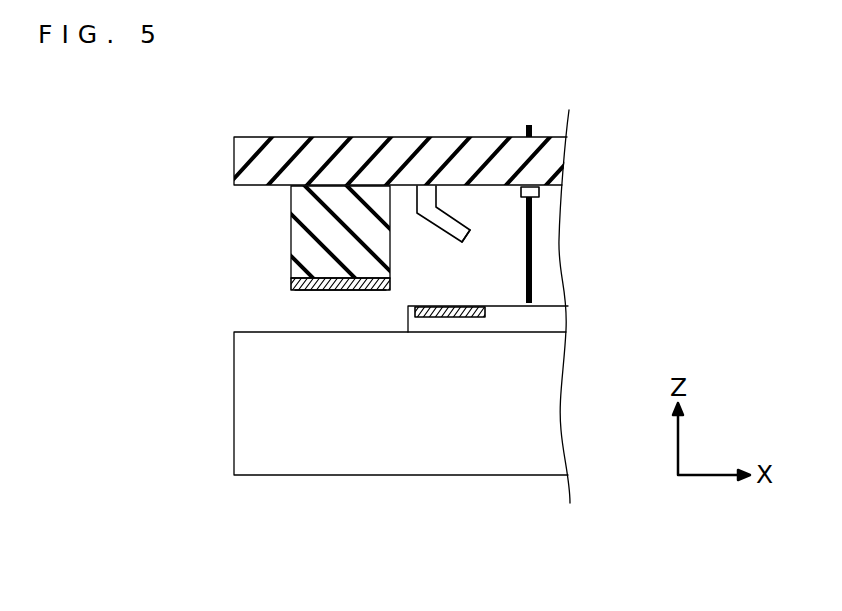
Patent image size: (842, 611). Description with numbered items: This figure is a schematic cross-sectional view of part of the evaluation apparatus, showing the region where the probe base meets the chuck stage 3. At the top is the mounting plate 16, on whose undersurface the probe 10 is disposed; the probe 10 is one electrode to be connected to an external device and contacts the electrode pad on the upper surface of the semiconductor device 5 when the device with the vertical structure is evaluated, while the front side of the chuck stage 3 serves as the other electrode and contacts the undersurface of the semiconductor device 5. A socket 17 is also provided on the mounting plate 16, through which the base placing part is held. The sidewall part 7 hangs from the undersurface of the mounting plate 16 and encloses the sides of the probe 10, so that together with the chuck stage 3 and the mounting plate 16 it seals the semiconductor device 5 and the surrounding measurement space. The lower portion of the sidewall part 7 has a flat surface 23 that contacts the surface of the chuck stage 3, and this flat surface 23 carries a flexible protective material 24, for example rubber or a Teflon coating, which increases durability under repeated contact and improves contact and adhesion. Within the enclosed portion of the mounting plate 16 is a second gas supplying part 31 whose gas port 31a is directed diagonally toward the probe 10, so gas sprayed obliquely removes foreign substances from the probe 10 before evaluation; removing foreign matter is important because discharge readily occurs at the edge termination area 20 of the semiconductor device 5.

The chuck stage 3 is at (250, 415).
The semiconductor device 5 is at (557, 319).
The sidewall part 7 is at (297, 222).
The probe 10 is at (533, 249).
The mounting plate 16 is at (252, 162).
The socket 17 is at (524, 198).
The edge termination area 20 is at (422, 306).
The flat surface 23 is at (336, 291).
The protective material 24 is at (290, 286).
The second gas supplying part 31 is at (443, 213).
The gas port 31a is at (469, 236).